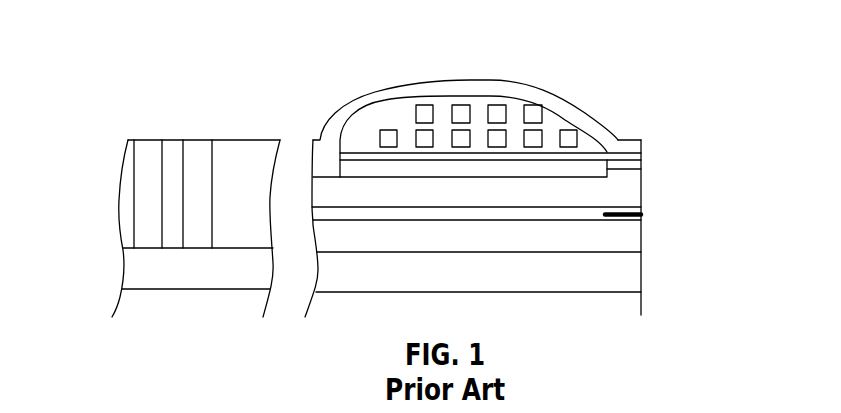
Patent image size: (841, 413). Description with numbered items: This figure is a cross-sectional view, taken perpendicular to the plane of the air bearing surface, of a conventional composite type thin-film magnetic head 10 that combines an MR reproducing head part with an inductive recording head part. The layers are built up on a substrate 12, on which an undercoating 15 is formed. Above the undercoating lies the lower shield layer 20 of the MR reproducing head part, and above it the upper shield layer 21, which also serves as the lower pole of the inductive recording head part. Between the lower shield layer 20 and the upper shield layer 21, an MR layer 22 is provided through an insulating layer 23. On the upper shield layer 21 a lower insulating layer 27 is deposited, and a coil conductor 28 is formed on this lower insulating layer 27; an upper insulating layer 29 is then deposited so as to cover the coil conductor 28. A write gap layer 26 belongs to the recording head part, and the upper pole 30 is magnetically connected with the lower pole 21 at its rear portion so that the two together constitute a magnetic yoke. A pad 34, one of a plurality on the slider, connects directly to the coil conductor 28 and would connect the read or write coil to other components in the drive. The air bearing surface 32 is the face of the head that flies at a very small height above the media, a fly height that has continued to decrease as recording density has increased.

The composite type thin-film magnetic head 10 is at (132, 88).
The substrate 12 is at (641, 305).
The undercoating 15 is at (641, 265).
The lower shield layer 20 is at (641, 237).
The upper shield layer 21 is at (641, 190).
The MR layer 22 is at (641, 215).
The insulating layer 23 is at (542, 210).
The write gap layer 26 is at (641, 155).
The lower insulating layer 27 is at (641, 170).
The coil conductor 28 is at (527, 107).
The upper insulating layer 29 is at (438, 108).
The upper pole 30 is at (633, 140).
The air bearing surface 32 is at (657, 287).
The pad 34 is at (133, 232).